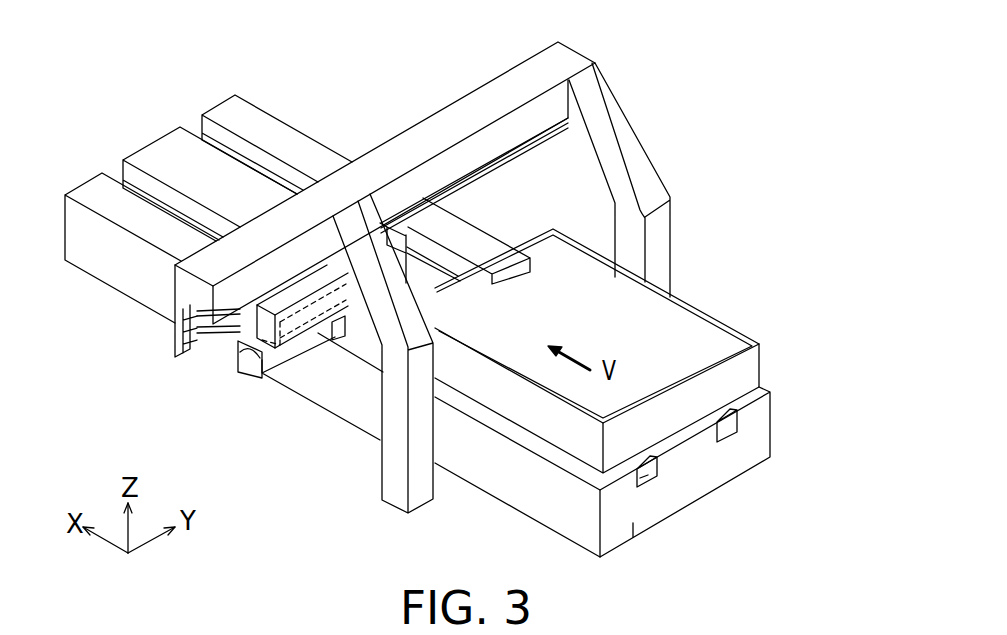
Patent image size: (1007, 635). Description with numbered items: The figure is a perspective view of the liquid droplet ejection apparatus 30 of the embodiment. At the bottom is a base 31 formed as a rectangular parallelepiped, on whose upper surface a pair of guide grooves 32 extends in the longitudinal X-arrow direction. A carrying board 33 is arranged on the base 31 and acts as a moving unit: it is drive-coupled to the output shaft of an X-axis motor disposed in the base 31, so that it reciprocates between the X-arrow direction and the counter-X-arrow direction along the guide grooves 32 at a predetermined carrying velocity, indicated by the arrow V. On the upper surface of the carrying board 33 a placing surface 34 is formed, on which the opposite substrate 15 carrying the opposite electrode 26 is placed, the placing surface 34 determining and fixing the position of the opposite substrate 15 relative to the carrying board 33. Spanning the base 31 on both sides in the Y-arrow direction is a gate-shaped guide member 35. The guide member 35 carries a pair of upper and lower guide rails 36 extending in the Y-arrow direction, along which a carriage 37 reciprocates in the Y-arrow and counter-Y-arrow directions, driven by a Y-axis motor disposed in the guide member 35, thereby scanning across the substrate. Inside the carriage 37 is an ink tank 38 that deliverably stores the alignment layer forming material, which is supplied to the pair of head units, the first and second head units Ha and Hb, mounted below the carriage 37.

The opposite substrate 15 is at (587, 320).
The opposite electrode 26 is at (543, 332).
The liquid droplet ejection apparatus 30 is at (692, 117).
The base 31 is at (765, 418).
The guide grooves 32 is at (722, 440).
The carrying board 33 is at (757, 366).
The placing surface 34 is at (747, 343).
The guide member 35 is at (572, 55).
The guide rails 36 is at (207, 343).
The carriage 37 is at (245, 330).
The ink tank 38 is at (305, 273).
The first head unit Ha is at (275, 443).
The second head unit Hb is at (342, 340).